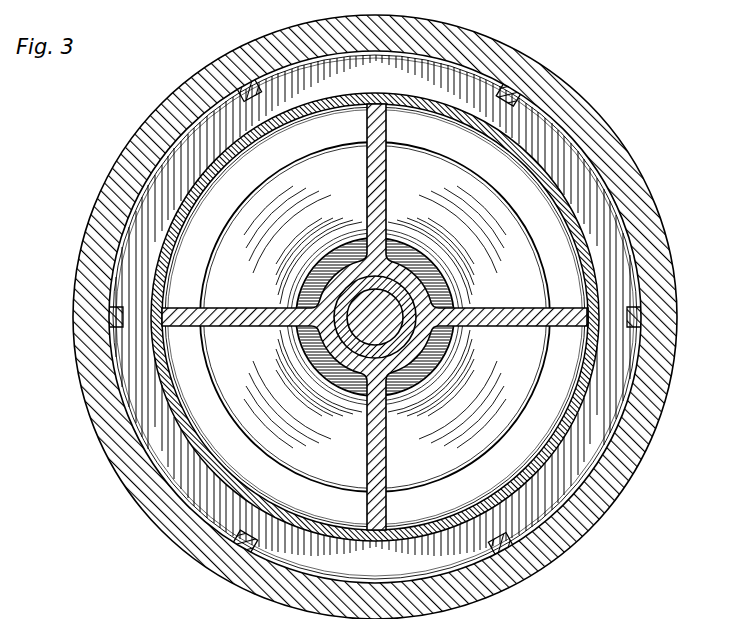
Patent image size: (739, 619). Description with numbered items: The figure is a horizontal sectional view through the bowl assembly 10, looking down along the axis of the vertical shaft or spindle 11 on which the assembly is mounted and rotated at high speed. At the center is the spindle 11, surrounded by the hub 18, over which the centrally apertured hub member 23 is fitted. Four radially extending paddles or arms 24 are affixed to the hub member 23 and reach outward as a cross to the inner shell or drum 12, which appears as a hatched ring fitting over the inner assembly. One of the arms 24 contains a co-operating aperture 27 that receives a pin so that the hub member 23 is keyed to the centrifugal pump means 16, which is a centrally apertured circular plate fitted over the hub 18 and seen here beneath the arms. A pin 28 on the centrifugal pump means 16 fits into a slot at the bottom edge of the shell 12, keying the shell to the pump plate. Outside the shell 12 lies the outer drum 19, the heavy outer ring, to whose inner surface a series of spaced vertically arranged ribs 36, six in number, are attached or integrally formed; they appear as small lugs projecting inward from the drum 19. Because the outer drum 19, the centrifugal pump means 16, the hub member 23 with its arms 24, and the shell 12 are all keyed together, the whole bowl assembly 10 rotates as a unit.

The bowl assembly 10 is at (63, 380).
The vertical shaft or spindle 11 is at (288, 328).
The inner shell or drum 12 is at (568, 440).
The centrifugal pump means 16 is at (276, 410).
The hub 18 is at (427, 262).
The outer drum 19 is at (96, 218).
The hub member 23 is at (345, 278).
The radially extending paddles or arms 24 is at (387, 183).
The co-operating aperture 27 is at (556, 338).
The pin 28 is at (604, 306).
The spaced vertically arranged ribs 36 is at (248, 78).